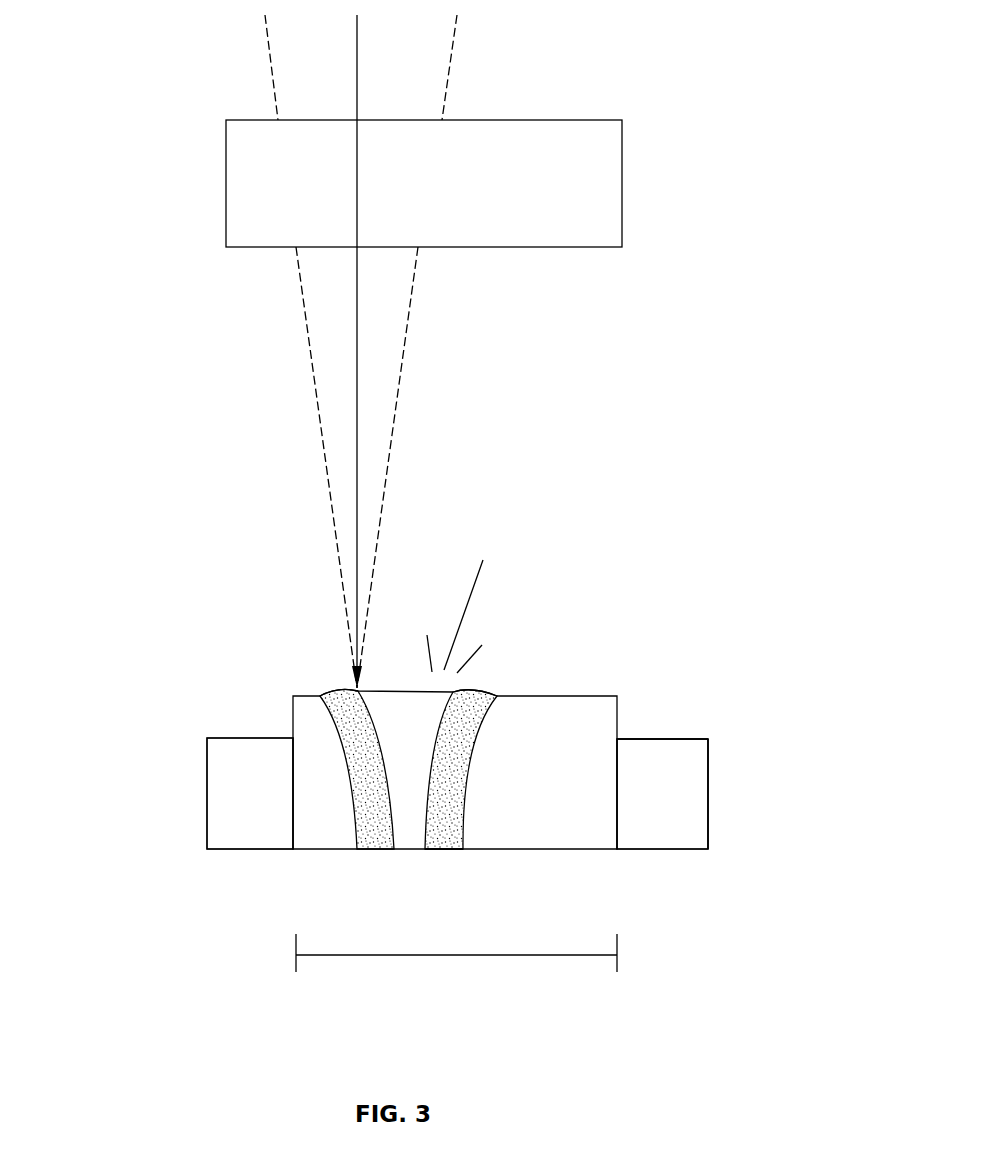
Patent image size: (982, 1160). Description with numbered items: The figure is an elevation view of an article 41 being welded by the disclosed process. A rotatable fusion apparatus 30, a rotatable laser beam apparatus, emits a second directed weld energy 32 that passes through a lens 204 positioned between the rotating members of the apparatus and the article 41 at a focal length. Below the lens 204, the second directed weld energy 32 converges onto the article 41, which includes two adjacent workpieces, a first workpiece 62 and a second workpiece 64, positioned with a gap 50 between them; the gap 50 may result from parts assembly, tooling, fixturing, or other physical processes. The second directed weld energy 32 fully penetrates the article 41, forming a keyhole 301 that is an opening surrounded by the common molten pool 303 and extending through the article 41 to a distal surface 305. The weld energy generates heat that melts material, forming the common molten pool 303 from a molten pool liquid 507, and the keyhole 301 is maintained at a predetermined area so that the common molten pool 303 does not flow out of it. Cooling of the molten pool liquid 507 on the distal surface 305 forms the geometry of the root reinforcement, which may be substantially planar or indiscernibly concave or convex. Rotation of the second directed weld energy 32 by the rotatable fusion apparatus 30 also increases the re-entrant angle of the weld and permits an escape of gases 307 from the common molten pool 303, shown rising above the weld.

The rotatable fusion apparatus 30 is at (108, 160).
The lens 204 is at (413, 193).
The second directed weld energy 32 is at (357, 527).
The gases 307 is at (480, 615).
The article 41 is at (182, 777).
The first workpiece 62 is at (248, 850).
The second workpiece 64 is at (655, 849).
The keyhole 301 is at (411, 850).
The common molten pool 303 is at (445, 849).
The distal surface 305 is at (685, 849).
The molten pool liquid 507 is at (465, 860).
The gap 50 is at (455, 955).